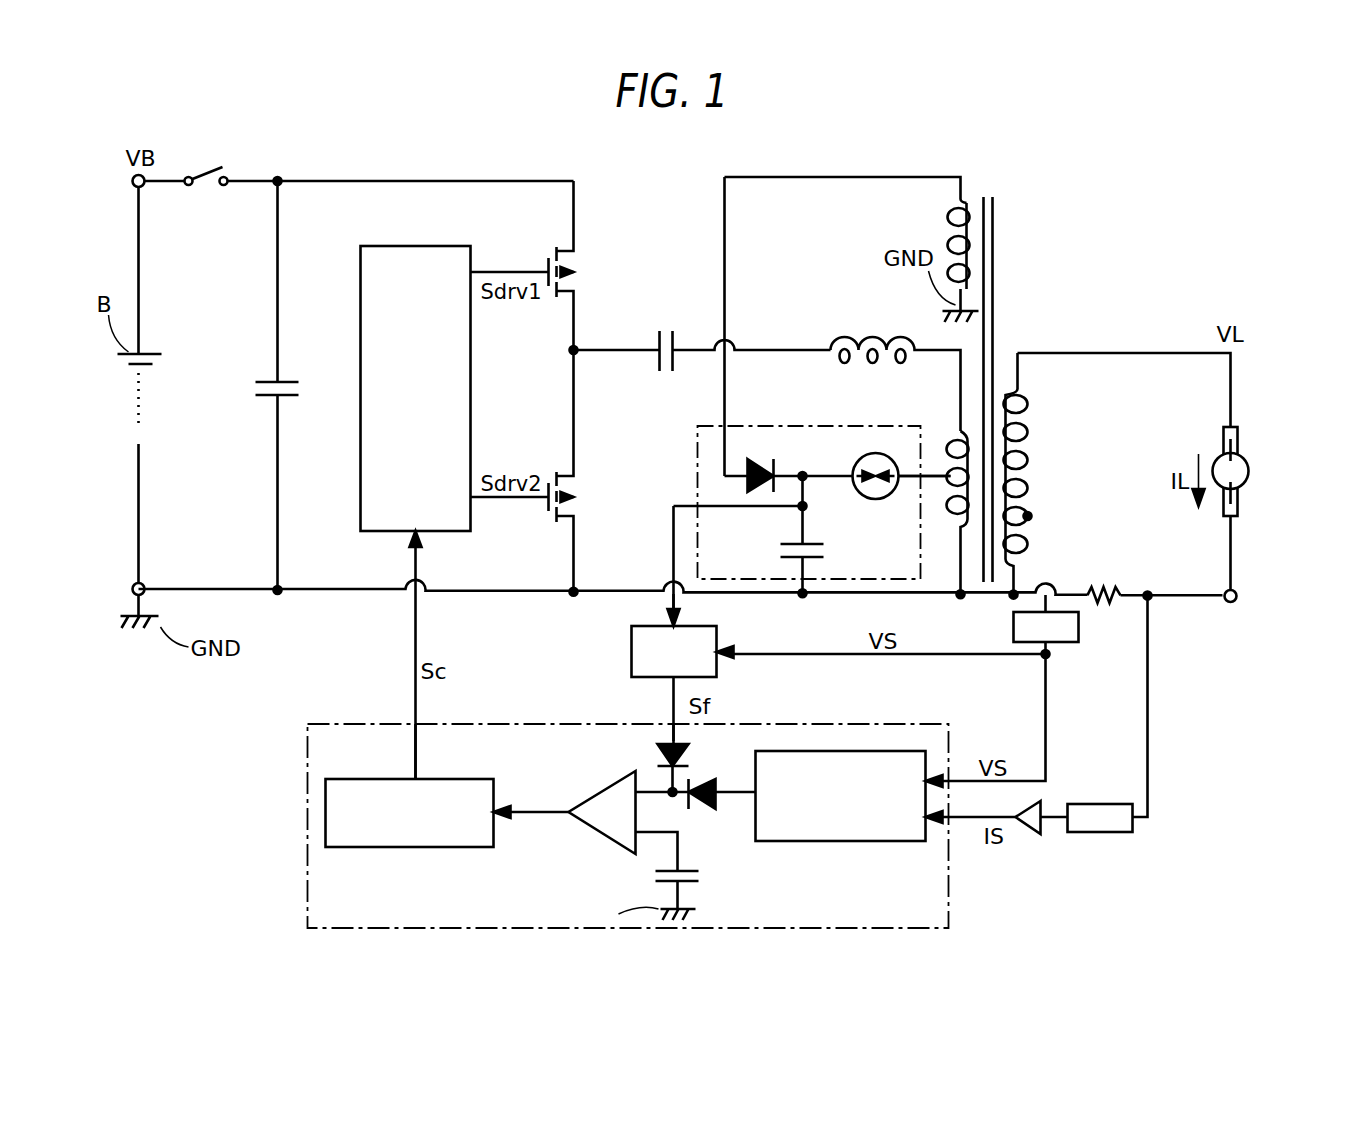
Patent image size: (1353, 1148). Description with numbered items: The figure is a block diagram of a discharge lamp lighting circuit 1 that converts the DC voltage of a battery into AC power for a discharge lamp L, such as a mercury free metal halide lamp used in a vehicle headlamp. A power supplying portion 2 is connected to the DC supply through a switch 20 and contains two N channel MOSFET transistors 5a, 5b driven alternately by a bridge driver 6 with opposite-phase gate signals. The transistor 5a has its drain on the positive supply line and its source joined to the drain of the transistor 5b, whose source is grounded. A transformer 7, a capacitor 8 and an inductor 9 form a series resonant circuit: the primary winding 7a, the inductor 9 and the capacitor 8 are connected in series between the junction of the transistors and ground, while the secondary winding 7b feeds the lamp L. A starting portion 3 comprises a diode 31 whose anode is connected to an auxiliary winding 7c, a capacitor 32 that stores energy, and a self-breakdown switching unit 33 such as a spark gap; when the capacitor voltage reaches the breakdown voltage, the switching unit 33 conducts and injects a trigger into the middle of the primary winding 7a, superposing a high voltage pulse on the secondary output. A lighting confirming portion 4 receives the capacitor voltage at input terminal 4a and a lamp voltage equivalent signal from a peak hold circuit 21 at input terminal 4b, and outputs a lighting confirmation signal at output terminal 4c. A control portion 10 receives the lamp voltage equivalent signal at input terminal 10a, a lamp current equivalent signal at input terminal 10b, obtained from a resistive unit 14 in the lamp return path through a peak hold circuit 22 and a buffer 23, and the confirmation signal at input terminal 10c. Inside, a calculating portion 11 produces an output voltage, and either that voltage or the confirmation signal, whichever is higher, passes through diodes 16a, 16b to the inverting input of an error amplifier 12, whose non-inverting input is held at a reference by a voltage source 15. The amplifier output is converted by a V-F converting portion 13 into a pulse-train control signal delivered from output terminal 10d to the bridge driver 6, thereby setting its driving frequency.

The discharge lamp lighting circuit 1 is at (1153, 243).
The power supplying portion 2 is at (672, 228).
The starting portion 3 is at (697, 470).
The lighting confirming portion 4 is at (628, 652).
The input terminal 4a is at (678, 626).
The input terminal 4b is at (718, 650).
The output terminal 4c is at (668, 690).
The transistor 5a is at (546, 262).
The transistor 5b is at (546, 508).
The bridge driver 6 is at (355, 275).
The transformer 7 is at (997, 378).
The primary winding 7a is at (970, 437).
The secondary winding 7b is at (1028, 453).
The auxiliary winding 7c is at (975, 205).
The capacitor 8 is at (655, 342).
The inductor 9 is at (855, 365).
The control portion 10 is at (950, 917).
The input terminal 10a is at (948, 782).
The input terminal 10b is at (948, 820).
The input terminal 10c is at (668, 722).
The output terminal 10d is at (415, 725).
The calculating portion 11 is at (835, 845).
The error amplifier 12 is at (605, 838).
The V-F converting portion 13 is at (378, 850).
The resistive unit 14 is at (1105, 604).
The voltage source 15 is at (700, 883).
The diode 16a is at (705, 805).
The diode 16b is at (688, 760).
The switch 20 is at (215, 162).
The peak hold circuit 21 is at (1062, 645).
The peak hold circuit 22 is at (1105, 838).
The buffer 23 is at (1028, 838).
The diode 31 is at (760, 458).
The capacitor 32 is at (788, 542).
The switching unit of self-breakdown type 33 is at (880, 500).
The discharge lamp L is at (1250, 470).